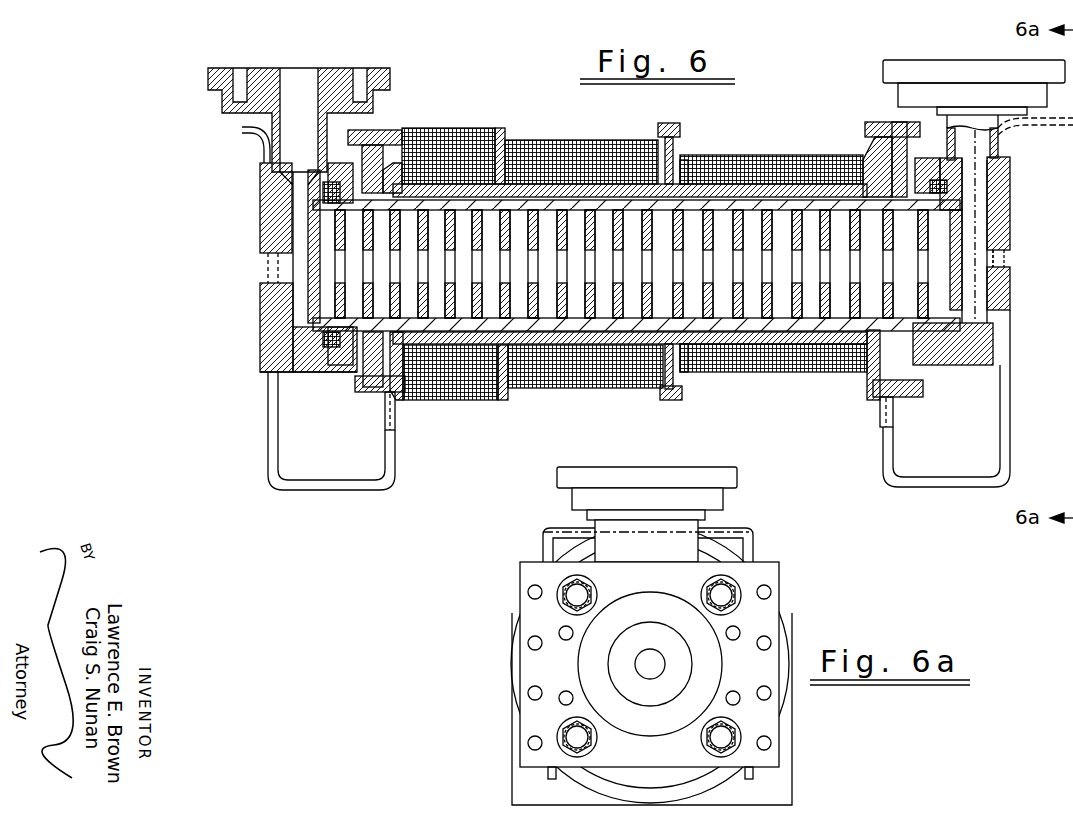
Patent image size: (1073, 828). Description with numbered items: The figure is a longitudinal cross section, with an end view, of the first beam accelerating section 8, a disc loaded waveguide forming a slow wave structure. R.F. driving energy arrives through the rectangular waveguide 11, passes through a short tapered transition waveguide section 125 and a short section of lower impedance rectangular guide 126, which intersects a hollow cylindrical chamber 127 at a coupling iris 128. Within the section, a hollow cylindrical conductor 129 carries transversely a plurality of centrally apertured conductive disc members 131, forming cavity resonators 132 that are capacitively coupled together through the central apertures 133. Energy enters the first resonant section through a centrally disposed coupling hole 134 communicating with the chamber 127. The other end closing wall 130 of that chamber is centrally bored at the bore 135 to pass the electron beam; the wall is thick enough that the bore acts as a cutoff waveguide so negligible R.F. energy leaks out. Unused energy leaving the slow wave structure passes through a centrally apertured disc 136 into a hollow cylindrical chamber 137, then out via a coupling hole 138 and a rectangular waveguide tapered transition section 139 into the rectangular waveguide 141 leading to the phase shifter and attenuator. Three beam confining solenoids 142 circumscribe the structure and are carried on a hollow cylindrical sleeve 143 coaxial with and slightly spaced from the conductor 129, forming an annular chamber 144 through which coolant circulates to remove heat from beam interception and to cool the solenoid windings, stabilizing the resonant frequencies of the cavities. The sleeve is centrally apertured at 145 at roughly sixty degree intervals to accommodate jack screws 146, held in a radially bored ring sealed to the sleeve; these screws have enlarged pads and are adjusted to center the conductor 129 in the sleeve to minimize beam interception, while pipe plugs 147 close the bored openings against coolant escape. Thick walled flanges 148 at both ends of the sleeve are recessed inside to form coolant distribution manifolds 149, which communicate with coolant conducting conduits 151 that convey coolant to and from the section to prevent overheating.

In FIG. 6, the first beam accelerating section 8 is at (545, 108).
In FIG. 6A, the first beam accelerating section 8 is at (505, 690).
In FIG. 6, the rectangular waveguide 11 is at (304, 84).
In FIG. 6, the tapered transition waveguide section 125 is at (272, 190).
In FIG. 6, the lower impedance rectangular guide 126 is at (270, 215).
In FIG. 6, the hollow cylindrical chamber 127 is at (300, 300).
In FIG. 6, the coupling iris 128 is at (308, 230).
In FIG. 6, the hollow cylindrical conductor 129 is at (540, 205).
In FIG. 6, the end closing wall 130 is at (272, 315).
In FIG. 6, the centrally apertured conductive disc members 131 is at (460, 300).
In FIG. 6, the cavity resonators 132 is at (545, 305).
In FIG. 6, the central apertures 133 is at (608, 270).
In FIG. 6, the coupling hole 134 is at (312, 275).
In FIG. 6, the bore 135 is at (1000, 270).
In FIG. 6A, the bore 135 is at (650, 655).
In FIG. 6, the centrally apertured disc 136 is at (965, 290).
In FIG. 6, the hollow cylindrical chamber 137 is at (998, 232).
In FIG. 6, the coupling hole 138 is at (1000, 185).
In FIG. 6, the rectangular waveguide tapered transition section 139 is at (985, 167).
In FIG. 6, the rectangular waveguide 141 is at (990, 140).
In FIG. 6A, the rectangular waveguide 141 is at (700, 535).
In FIG. 6, the beam confining solenoids 142 is at (498, 128).
In FIG. 6, the hollow cylindrical sleeve 143 is at (618, 185).
In FIG. 6, the annular chamber 144 is at (770, 165).
In FIG. 6, the apertures in sleeve 145 is at (688, 170).
In FIG. 6, the jack screws 146 is at (660, 124).
In FIG. 6, the pipe plugs 147 is at (670, 124).
In FIG. 6, the thick walled flanges 148 is at (378, 130).
In FIG. 6A, the thick walled flanges 148 is at (740, 550).
In FIG. 6, the coolant distribution manifolds 149 is at (390, 168).
In FIG. 6, the coolant conducting conduit 151 is at (400, 440).
In FIG. 6A, the coolant conducting conduit 151 is at (548, 776).